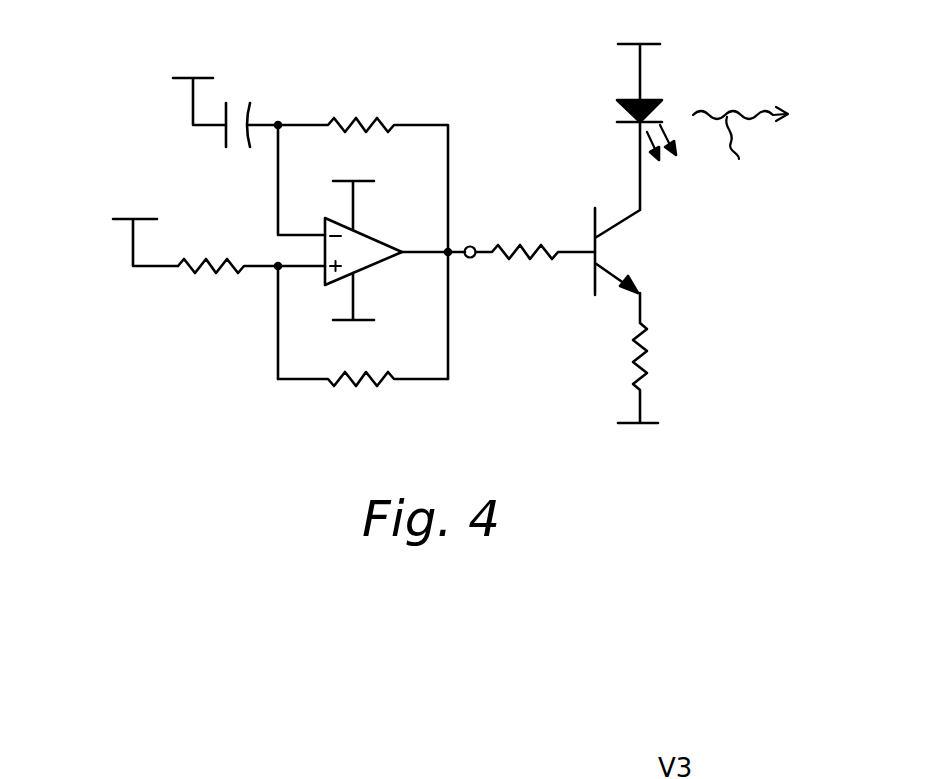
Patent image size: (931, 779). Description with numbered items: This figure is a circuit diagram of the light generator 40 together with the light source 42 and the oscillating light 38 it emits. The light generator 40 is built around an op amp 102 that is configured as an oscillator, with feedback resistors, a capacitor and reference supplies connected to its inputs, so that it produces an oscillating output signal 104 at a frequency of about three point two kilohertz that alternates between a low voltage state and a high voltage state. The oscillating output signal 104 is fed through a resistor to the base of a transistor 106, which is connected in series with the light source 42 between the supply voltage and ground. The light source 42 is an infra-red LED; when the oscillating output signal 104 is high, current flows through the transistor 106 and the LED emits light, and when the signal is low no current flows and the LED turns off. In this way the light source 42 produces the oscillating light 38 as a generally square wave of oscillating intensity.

The light generator 40 is at (289, 256).
The op amp 102 is at (366, 268).
The oscillating output signal 104 is at (468, 258).
The transistor 106 is at (592, 283).
The light source 42 is at (650, 98).
The oscillating light 38 is at (740, 153).